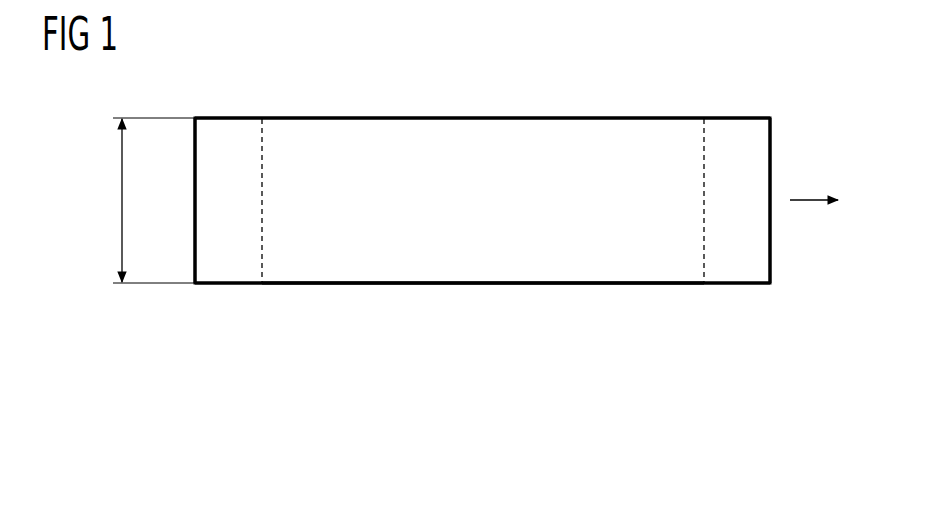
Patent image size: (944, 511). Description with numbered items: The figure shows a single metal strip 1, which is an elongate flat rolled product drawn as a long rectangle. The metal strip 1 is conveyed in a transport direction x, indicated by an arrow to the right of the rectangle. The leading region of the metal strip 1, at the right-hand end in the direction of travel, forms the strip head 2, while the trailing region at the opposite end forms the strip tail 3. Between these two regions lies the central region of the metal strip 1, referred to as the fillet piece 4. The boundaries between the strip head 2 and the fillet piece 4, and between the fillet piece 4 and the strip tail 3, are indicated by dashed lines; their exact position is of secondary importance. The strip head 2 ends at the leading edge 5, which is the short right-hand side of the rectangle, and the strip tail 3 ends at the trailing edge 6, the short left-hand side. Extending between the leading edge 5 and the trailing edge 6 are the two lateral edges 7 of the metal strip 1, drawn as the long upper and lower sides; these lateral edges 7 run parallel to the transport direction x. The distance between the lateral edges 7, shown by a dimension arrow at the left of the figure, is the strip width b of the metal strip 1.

The metal strip 1 is at (674, 112).
The strip head 2 is at (735, 287).
The strip tail 3 is at (220, 287).
The fillet piece 4 is at (494, 287).
The leading edge 5 is at (771, 237).
The trailing edge 6 is at (195, 208).
The lateral edge 7 is at (352, 117).
The strip width b is at (122, 170).
The transport direction x is at (805, 200).